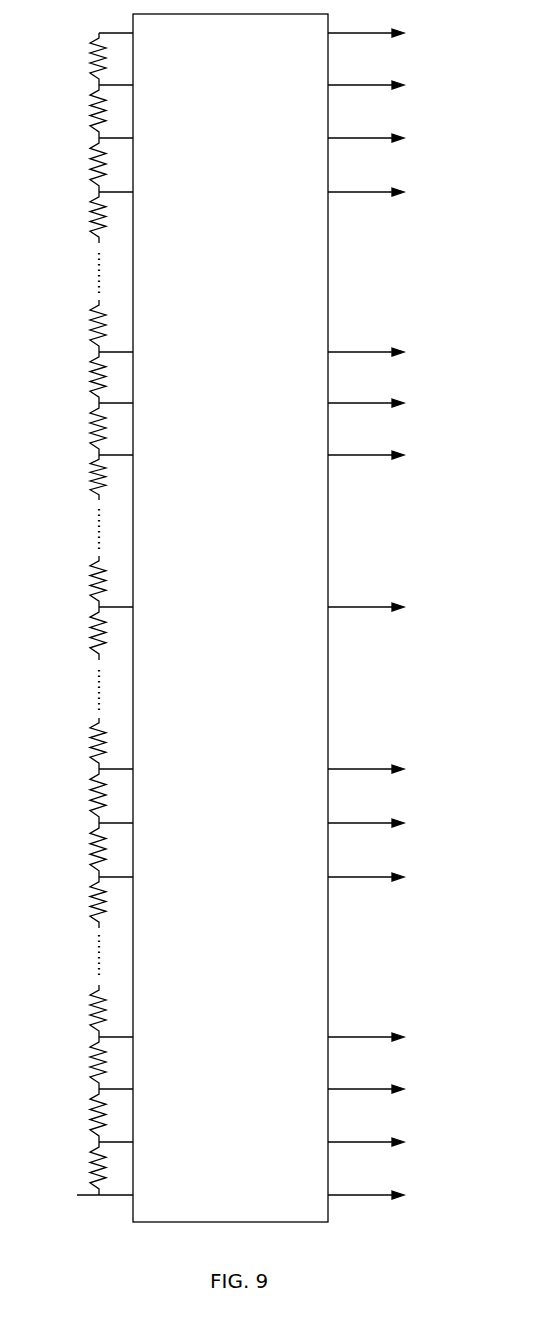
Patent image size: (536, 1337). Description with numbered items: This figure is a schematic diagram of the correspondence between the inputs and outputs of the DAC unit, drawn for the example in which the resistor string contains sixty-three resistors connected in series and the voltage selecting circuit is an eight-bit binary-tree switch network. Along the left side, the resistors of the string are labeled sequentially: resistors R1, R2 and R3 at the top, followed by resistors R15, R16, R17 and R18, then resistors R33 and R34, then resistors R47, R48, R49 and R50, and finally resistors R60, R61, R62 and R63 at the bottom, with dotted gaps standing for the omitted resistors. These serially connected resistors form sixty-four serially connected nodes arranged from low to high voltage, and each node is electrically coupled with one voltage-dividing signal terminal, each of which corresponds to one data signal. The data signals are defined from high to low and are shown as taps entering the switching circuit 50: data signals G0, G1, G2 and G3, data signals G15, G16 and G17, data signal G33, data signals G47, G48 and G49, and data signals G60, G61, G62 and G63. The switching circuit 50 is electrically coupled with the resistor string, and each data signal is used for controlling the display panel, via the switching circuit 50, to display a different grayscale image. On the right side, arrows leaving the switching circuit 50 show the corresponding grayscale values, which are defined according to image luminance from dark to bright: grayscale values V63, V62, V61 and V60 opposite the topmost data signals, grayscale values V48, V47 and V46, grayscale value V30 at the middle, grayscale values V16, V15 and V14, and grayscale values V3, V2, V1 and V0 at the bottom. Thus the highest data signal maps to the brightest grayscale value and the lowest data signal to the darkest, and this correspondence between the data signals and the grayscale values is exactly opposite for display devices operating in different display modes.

The switching circuit 50 is at (230, 618).
The resistor R1 is at (79, 59).
The resistor R2 is at (79, 111).
The resistor R3 is at (79, 165).
The resistor R15 is at (77, 326).
The resistor R16 is at (77, 377).
The resistor R17 is at (77, 429).
The resistor R18 is at (77, 477).
The resistor R33 is at (77, 581).
The resistor R34 is at (77, 633).
The resistor R47 is at (77, 743).
The resistor R48 is at (77, 796).
The resistor R49 is at (77, 850).
The resistor R50 is at (77, 902).
The resistor R60 is at (77, 1011).
The resistor R61 is at (77, 1063).
The resistor R62 is at (77, 1115).
The resistor R63 is at (77, 1168).
The data signal G0 is at (132, 33).
The data signal G1 is at (132, 85).
The data signal G2 is at (132, 138).
The data signal G3 is at (132, 192).
The data signal G15 is at (137, 352).
The data signal G16 is at (137, 403).
The data signal G17 is at (137, 455).
The data signal G33 is at (137, 607).
The data signal G47 is at (137, 769).
The data signal G48 is at (137, 823).
The data signal G49 is at (137, 877).
The data signal G60 is at (137, 1037).
The data signal G61 is at (137, 1089).
The data signal G62 is at (137, 1142).
The data signal G63 is at (126, 1195).
The grayscale value V63 is at (384, 33).
The grayscale value V62 is at (384, 85).
The grayscale value V61 is at (384, 138).
The grayscale value V60 is at (384, 192).
The grayscale value V48 is at (384, 352).
The grayscale value V47 is at (384, 403).
The grayscale value V46 is at (384, 455).
The grayscale value V30 is at (384, 607).
The grayscale value V16 is at (384, 769).
The grayscale value V15 is at (384, 823).
The grayscale value V14 is at (384, 877).
The grayscale value V3 is at (381, 1037).
The grayscale value V2 is at (381, 1089).
The grayscale value V1 is at (381, 1142).
The grayscale value V0 is at (381, 1195).